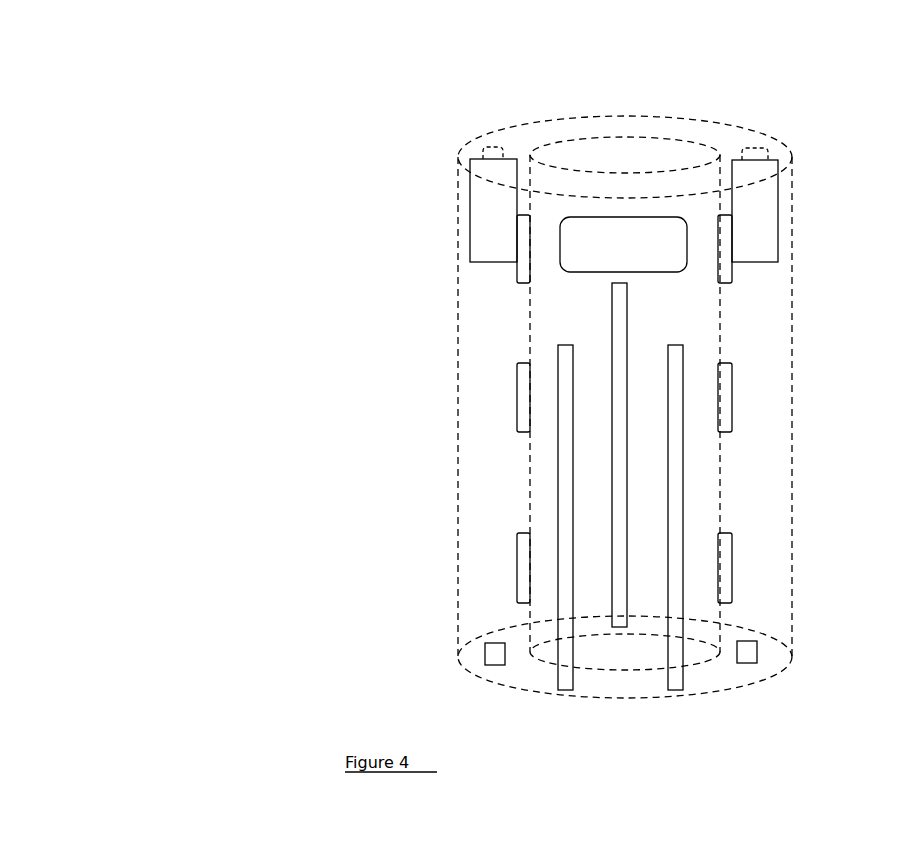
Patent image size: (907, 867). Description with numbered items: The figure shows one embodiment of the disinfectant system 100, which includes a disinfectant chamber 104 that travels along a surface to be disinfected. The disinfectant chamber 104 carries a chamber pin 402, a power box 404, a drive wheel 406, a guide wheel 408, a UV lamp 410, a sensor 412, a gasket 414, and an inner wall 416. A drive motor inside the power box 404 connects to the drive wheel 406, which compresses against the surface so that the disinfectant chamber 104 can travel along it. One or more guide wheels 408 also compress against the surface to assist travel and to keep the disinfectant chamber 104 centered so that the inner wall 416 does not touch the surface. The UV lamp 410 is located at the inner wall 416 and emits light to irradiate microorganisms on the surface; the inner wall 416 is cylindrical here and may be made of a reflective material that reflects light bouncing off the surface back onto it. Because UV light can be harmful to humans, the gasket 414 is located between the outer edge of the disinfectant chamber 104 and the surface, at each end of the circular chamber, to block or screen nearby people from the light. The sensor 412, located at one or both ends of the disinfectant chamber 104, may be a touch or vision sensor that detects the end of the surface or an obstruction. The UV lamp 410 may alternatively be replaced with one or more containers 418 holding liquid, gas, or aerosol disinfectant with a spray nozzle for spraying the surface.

The disinfectant system 100 is at (112, 120).
The disinfectant chamber 104 is at (452, 185).
The chamber pin 402 is at (484, 151).
The power box 404 is at (484, 201).
The drive wheel 406 is at (516, 269).
The guide wheel 408 is at (516, 383).
The UV lamp 410 is at (620, 630).
The sensor 412 is at (483, 655).
The gasket 414 is at (628, 134).
The inner wall 416 is at (527, 482).
The container 418 is at (689, 241).